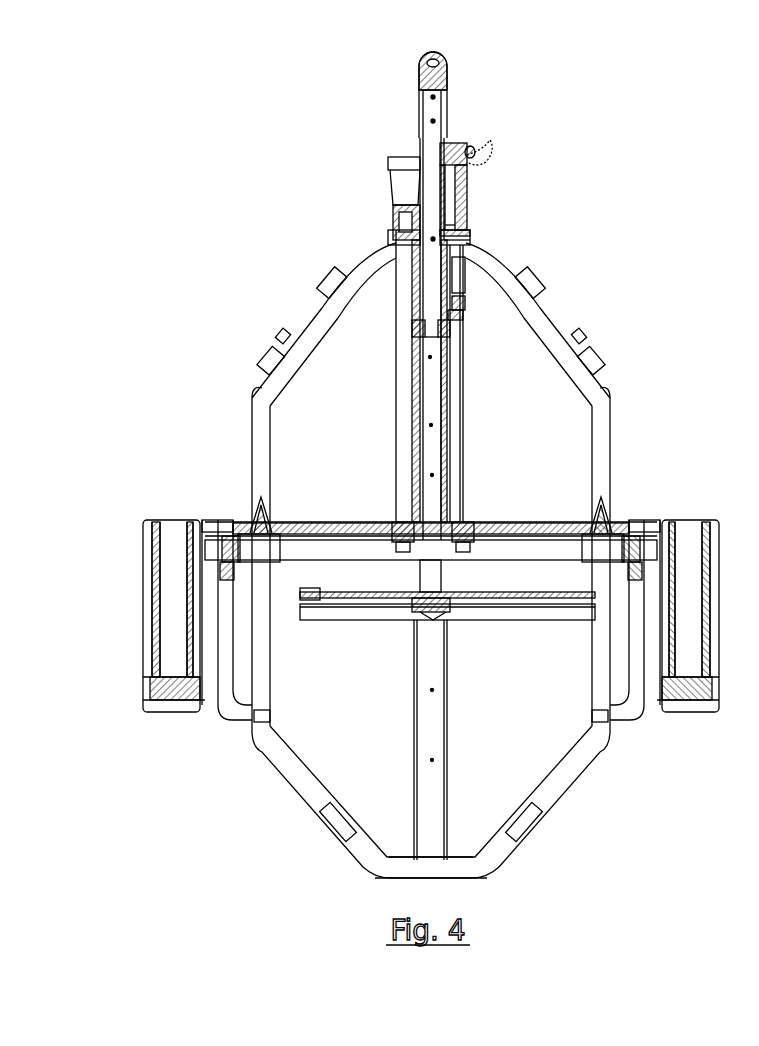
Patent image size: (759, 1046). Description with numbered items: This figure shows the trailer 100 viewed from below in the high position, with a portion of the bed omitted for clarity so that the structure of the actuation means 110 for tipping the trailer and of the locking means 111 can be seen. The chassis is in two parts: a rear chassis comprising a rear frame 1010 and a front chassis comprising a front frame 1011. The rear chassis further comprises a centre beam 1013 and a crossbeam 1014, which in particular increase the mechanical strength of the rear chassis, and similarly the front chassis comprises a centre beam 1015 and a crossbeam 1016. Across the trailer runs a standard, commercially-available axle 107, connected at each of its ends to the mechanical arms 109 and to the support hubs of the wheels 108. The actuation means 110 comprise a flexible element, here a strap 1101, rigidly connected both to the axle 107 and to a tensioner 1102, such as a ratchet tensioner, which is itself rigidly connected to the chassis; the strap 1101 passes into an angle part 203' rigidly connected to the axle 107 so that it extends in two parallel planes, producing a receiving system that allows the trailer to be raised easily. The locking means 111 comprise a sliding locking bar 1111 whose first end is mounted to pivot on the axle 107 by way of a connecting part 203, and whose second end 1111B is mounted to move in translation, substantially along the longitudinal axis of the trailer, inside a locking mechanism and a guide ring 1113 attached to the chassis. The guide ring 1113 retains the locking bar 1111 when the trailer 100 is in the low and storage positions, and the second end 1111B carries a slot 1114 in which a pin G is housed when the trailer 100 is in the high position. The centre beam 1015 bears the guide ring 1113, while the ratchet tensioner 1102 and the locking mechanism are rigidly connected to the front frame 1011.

The trailer 100 is at (628, 824).
The axle 107 is at (307, 550).
The wheels 108 is at (160, 520).
The mechanical arms 109 is at (207, 530).
The actuation means 110 is at (360, 142).
The locking means 111 is at (485, 210).
The rear frame 1010 is at (303, 797).
The front frame 1011 is at (333, 322).
The centre beam 1013 is at (437, 813).
The crossbeam 1014 is at (542, 617).
The centre beam 1015 is at (427, 357).
The crossbeam 1016 is at (543, 520).
The strap 1101 is at (403, 330).
The tensioner 1102 is at (388, 215).
The locking bar 1111 is at (465, 402).
The second end 1111B is at (472, 260).
The guide ring 1113 is at (462, 290).
The slot 1114 is at (470, 232).
The connecting part 203 is at (301, 447).
The angle part 203' is at (575, 454).
The pin G is at (477, 240).